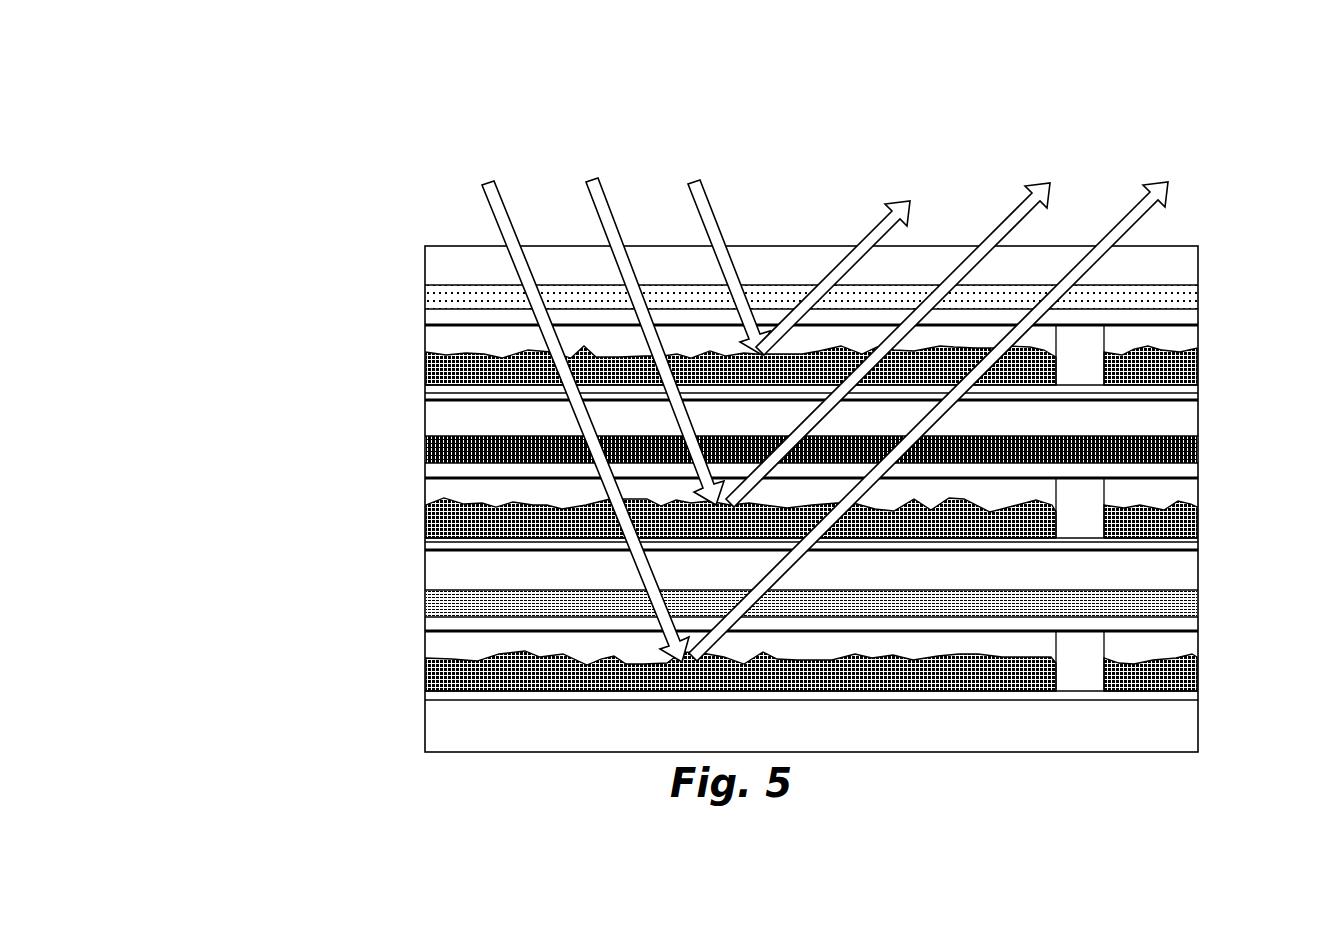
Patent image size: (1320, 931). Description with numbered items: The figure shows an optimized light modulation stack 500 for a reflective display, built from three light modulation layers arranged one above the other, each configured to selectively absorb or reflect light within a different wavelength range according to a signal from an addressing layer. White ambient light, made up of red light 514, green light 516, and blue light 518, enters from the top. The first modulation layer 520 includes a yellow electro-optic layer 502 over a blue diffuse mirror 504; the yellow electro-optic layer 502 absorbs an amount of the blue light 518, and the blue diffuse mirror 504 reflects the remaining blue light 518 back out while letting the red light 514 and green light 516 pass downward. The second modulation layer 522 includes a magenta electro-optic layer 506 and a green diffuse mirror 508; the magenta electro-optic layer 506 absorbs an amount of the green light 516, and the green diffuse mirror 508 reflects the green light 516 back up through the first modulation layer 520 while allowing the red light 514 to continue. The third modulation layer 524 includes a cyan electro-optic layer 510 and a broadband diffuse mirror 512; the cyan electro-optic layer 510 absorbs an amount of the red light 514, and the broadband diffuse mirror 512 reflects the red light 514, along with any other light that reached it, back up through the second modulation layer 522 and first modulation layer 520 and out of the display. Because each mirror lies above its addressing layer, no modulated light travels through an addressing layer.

The optimized light modulation stack 500 is at (305, 162).
The yellow electro-optic layer 502 is at (428, 293).
The blue diffuse mirror 504 is at (443, 362).
The magenta electro-optic layer 506 is at (428, 447).
The green diffuse mirror 508 is at (443, 522).
The cyan electro-optic layer 510 is at (428, 603).
The broadband diffuse mirror 512 is at (428, 667).
The red light 514 is at (488, 202).
The green light 516 is at (597, 157).
The blue light 518 is at (766, 153).
The first modulation layer 520 is at (1198, 393).
The second modulation layer 522 is at (1198, 544).
The third modulation layer 524 is at (1198, 697).